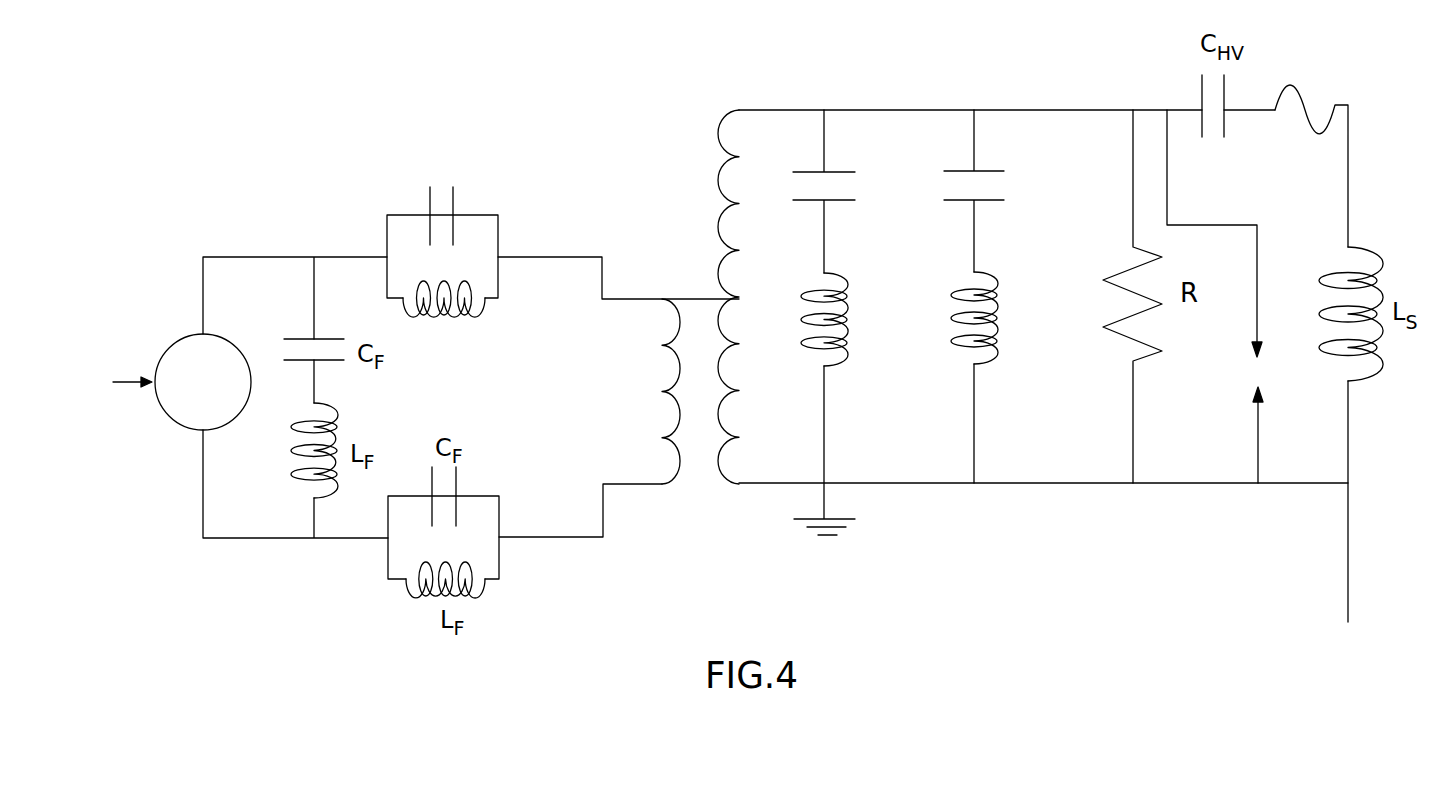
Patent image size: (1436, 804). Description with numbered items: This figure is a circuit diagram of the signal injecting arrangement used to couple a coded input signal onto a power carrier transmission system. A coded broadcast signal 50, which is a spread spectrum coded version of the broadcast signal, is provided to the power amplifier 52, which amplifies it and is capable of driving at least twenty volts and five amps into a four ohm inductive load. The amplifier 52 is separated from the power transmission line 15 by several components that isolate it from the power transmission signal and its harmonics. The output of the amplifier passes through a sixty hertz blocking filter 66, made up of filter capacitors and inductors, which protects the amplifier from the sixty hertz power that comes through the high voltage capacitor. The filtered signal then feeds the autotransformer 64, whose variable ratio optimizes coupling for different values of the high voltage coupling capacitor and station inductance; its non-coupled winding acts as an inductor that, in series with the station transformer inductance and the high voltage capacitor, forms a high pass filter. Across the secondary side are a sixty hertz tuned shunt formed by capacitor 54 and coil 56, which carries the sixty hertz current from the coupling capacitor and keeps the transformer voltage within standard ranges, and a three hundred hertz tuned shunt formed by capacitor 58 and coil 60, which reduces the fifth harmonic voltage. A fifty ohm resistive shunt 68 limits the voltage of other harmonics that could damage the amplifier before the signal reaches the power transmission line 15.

The power transmission line 15 is at (1347, 561).
The coded broadcast signal 50 is at (132, 365).
The power amplifier 52 is at (193, 413).
The 60 Hz shunt capacitor 54 is at (845, 165).
The 60 Hz shunt coil 56 is at (815, 359).
The 300 Hz shunt capacitor 58 is at (989, 161).
The 300 Hz shunt coil 60 is at (987, 369).
The autotransformer 64 is at (643, 204).
The 60 Hz blocking filter 66 is at (368, 250).
The resistive shunt 68 is at (1153, 332).